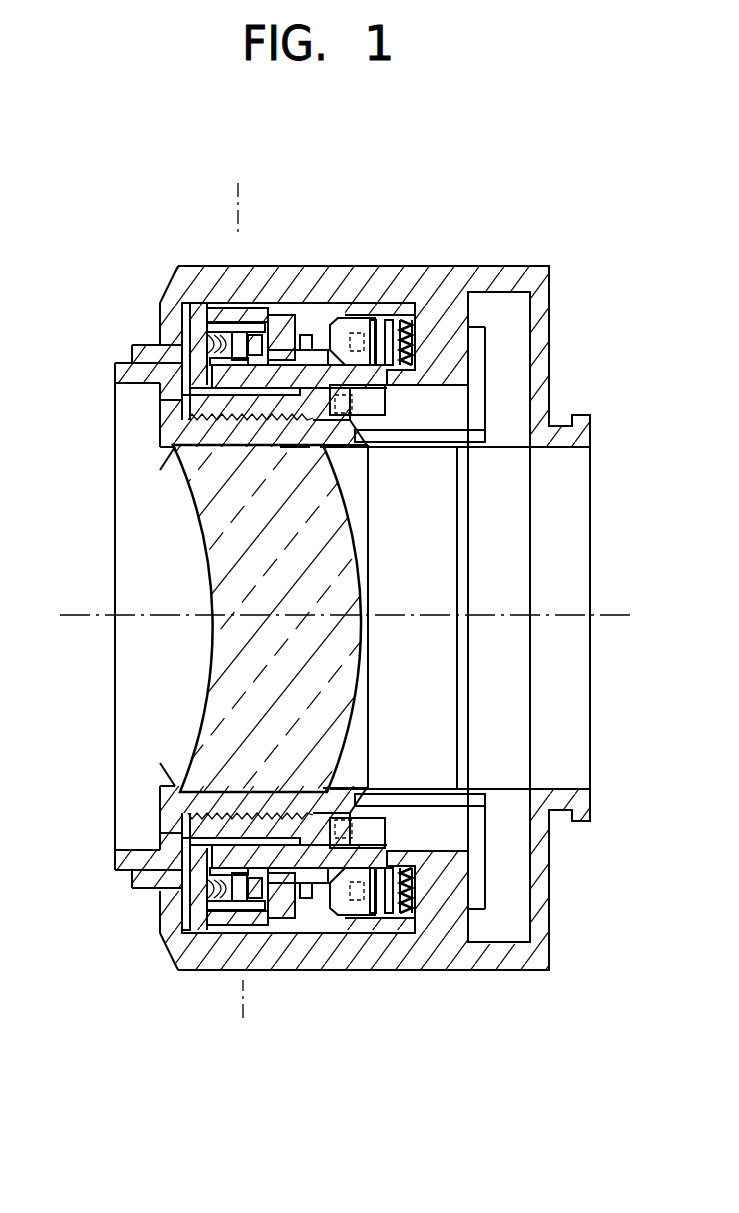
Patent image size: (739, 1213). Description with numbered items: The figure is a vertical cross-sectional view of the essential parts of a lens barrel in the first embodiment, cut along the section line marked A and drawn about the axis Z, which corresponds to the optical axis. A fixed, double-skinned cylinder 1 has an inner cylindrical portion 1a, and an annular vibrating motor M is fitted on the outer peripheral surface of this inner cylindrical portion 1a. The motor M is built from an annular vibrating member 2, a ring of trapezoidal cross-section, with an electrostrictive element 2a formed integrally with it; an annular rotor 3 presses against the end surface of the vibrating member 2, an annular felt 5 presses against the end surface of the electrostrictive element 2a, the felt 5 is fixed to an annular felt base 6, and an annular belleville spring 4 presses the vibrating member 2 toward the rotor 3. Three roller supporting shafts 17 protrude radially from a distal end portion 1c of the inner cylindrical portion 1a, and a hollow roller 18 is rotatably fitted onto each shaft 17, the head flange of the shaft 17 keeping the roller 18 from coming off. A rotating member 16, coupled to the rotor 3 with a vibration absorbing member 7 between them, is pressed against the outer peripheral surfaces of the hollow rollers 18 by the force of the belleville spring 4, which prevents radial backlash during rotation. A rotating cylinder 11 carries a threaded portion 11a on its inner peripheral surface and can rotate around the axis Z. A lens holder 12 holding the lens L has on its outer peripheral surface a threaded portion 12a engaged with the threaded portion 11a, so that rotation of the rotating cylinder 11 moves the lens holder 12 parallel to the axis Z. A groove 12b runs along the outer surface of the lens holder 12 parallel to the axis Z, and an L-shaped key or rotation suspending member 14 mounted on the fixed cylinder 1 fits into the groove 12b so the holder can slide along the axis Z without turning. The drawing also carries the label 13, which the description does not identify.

The fixed cylinder 1 is at (537, 280).
The inner cylindrical portion 1a is at (392, 378).
The distal end portion 1c is at (160, 403).
The annular vibrating member 2 is at (353, 333).
The electrostrictive element 2a is at (368, 330).
The annular rotor 3 is at (292, 315).
The annular belleville spring 4 is at (430, 322).
The annular felt 5 is at (382, 315).
The annular felt base 6 is at (398, 318).
The vibration absorbing member 7 is at (275, 318).
The rotating cylinder 11 is at (178, 398).
The threaded portion 11a is at (170, 455).
The lens holder 12 is at (125, 376).
The threaded portion 12a is at (297, 445).
The groove 12b is at (337, 453).
The plate 13 is at (373, 405).
The key or rotation suspending member 14 is at (487, 438).
The rotating member 16 is at (230, 310).
The roller supporting shaft 17 is at (205, 335).
The hollow roller 18 is at (222, 347).
The lens L is at (148, 628).
The annular vibrating motor M is at (290, 216).
The axis Z is at (615, 613).
The section line A- A is at (238, 183).